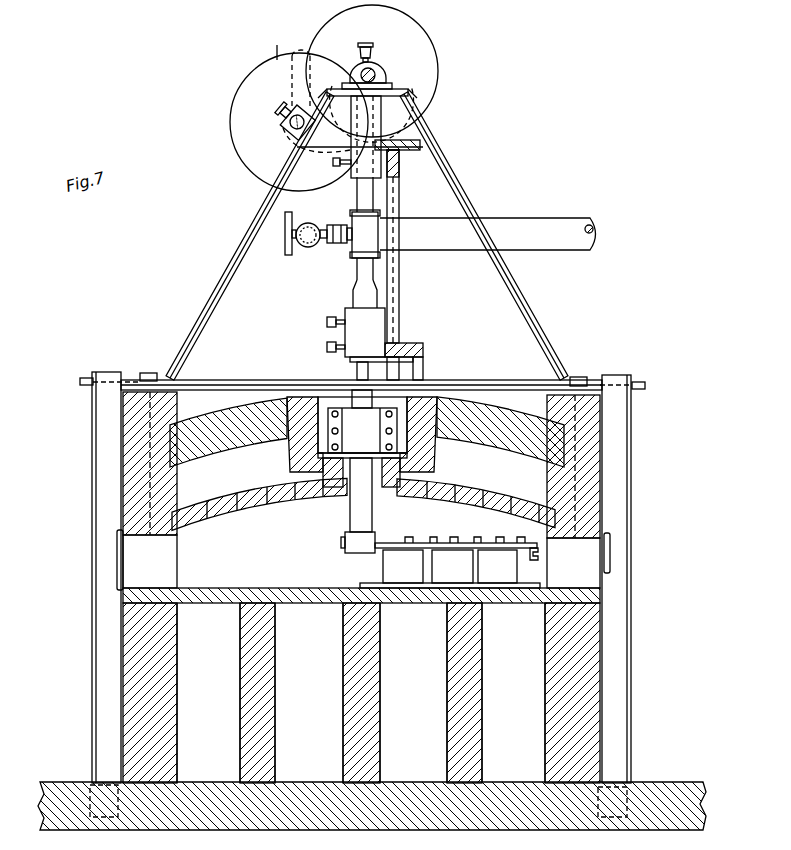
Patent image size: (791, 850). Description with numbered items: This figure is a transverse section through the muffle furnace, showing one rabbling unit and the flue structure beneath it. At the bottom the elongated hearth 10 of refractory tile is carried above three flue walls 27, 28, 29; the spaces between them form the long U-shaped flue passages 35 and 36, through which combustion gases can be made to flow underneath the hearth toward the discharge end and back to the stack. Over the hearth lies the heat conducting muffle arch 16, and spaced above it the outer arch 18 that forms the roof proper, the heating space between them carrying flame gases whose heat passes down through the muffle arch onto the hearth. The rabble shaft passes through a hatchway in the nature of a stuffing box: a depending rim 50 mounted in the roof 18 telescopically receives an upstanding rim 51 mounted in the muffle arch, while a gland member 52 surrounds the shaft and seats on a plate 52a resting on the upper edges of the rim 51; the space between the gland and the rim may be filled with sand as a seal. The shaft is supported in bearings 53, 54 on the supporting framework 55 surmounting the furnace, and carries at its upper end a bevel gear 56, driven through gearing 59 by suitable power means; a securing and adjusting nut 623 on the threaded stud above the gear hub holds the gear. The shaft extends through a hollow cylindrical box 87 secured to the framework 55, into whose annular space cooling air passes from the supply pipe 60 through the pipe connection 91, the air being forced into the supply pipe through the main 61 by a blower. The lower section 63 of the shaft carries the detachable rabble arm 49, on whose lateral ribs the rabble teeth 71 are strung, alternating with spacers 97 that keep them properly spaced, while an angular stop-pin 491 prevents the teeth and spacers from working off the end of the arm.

The hearth 10 is at (224, 590).
The muffle arch 16 is at (286, 483).
The outer arch 18 is at (212, 444).
The flue wall 27 is at (250, 722).
The center flue wall 28 is at (343, 719).
The flue wall 29 is at (447, 720).
The flue passage 35 is at (361, 693).
The flue passage 36 is at (361, 693).
The rabble arm 49 is at (442, 538).
The depending rim 50 is at (432, 466).
The upstanding rim 51 is at (317, 498).
The gland member 52 is at (348, 412).
The plate 52a is at (320, 452).
The bearing 53 is at (345, 333).
The bearing 54 is at (352, 170).
The supporting framework 55 is at (262, 214).
The bevel gear 56 is at (410, 93).
The gearing 59 is at (318, 41).
The supply pipe 60 is at (310, 246).
The main 61 is at (524, 223).
The lower section 63 is at (375, 514).
The rabble teeth 71 is at (385, 568).
The box 87 is at (369, 246).
The pipe connection 91 is at (345, 244).
The spacer 97 is at (492, 538).
The stop-pin 491 is at (607, 573).
The nut 623 is at (388, 81).